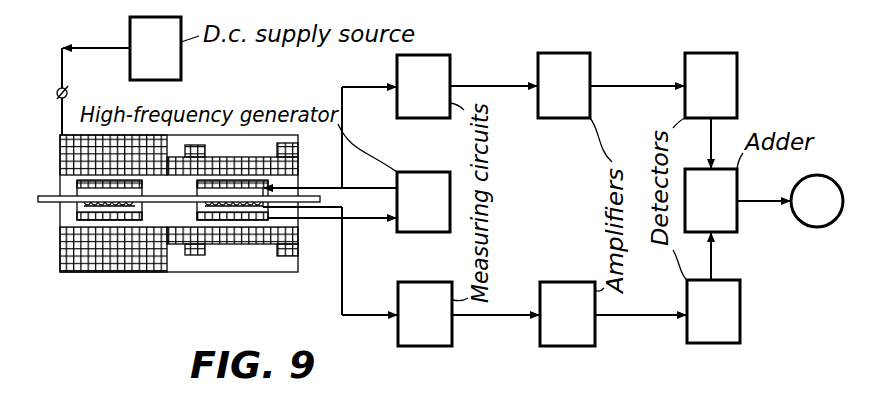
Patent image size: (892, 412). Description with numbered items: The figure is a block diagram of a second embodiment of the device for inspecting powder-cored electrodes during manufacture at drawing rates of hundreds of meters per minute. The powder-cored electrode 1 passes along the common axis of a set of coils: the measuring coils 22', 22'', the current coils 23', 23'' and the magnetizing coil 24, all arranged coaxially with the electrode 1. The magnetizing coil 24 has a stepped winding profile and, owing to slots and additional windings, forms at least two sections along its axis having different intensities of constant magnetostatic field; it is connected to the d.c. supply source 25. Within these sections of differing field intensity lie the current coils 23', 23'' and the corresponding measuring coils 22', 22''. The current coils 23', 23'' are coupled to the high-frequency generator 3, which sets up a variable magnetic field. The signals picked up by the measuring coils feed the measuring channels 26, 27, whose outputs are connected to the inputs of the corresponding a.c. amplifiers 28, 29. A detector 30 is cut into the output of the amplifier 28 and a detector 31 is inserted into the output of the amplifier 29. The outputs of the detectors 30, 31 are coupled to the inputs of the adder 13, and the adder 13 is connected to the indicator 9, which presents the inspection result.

The powder-cored electrode 1 is at (48, 196).
The high-frequency generator 3 is at (423, 202).
The indicator 9 is at (817, 201).
The adder 13 is at (711, 200).
The measuring coil 22' is at (113, 259).
The measuring coil 22'' is at (254, 251).
The current coil 23' is at (82, 214).
The current coil 23'' is at (232, 247).
The magnetizing coil 24 is at (88, 262).
The d.c. supply source 25 is at (155, 48).
The measuring channel 26 is at (423, 86).
The measuring channel 27 is at (425, 314).
The a.c. amplifier 28 is at (564, 85).
The a.c. amplifier 29 is at (567, 314).
The detector 30 is at (711, 85).
The detector 31 is at (713, 311).